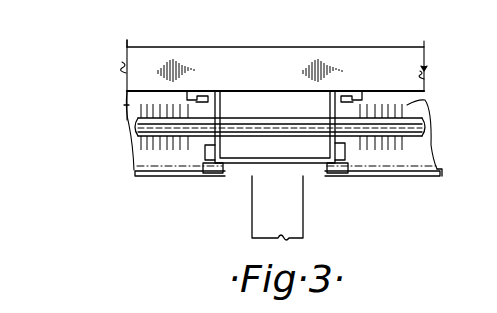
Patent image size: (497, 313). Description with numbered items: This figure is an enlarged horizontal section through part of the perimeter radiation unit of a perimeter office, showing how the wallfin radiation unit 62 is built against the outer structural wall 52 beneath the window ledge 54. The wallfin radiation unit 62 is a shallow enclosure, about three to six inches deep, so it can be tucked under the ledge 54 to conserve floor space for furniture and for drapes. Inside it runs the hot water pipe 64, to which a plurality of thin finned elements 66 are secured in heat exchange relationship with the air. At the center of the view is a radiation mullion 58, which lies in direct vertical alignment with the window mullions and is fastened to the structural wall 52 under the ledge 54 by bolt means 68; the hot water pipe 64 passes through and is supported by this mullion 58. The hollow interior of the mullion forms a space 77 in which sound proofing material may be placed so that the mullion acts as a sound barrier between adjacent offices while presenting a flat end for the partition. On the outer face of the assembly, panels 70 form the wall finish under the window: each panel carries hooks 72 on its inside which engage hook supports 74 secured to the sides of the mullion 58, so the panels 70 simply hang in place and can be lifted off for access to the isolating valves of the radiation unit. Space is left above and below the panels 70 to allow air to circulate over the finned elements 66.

The outer structural wall 52 is at (248, 58).
The ledge 54 is at (446, 168).
The radiation mullion 58 is at (312, 168).
The wallfin radiation unit 62 is at (408, 148).
The hot water pipe 64 is at (422, 127).
The thin finned elements 66 is at (407, 106).
The bolt means 68 is at (351, 92).
The panels 70 is at (150, 178).
The hooks 72 is at (340, 175).
The hook supports 74 is at (205, 153).
The space 77 is at (253, 142).